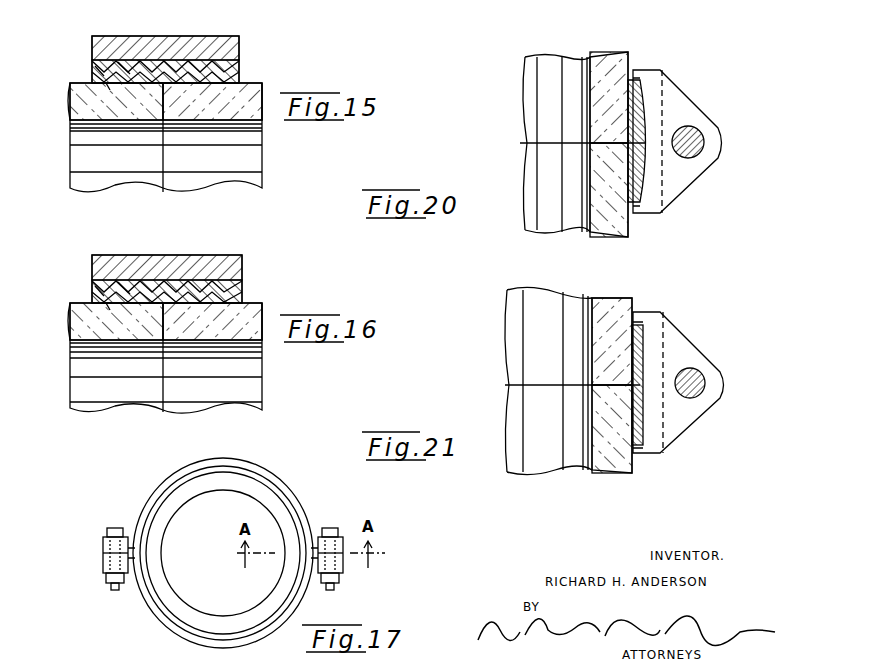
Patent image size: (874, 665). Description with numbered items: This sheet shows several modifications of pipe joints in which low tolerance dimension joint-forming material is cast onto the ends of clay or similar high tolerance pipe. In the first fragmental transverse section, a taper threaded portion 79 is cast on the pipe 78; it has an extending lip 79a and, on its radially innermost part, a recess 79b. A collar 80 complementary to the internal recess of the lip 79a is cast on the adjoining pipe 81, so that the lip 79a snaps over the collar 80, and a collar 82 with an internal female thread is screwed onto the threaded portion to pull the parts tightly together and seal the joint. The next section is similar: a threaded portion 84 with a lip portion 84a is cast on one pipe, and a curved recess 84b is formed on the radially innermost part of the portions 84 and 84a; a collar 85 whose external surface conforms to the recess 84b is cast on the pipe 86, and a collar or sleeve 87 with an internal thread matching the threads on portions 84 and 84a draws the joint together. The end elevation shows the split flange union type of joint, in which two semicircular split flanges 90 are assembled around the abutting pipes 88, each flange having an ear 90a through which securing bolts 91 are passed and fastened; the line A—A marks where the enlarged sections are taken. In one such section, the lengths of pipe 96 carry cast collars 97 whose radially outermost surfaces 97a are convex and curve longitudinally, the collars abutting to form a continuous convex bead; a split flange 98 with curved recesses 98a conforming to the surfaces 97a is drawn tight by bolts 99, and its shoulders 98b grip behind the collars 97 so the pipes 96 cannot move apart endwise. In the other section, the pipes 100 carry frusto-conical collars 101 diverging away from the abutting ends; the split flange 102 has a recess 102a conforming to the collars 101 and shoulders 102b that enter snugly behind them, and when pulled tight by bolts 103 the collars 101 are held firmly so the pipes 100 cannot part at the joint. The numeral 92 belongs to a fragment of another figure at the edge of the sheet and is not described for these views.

In FIG. 15, the pipe 78 is at (262, 84).
In FIG. 15, the taper threaded portion 79 is at (192, 68).
In FIG. 15, the extending lip 79a is at (95, 66).
In FIG. 15, the recess 79b is at (128, 70).
In FIG. 15, the collar 80 is at (106, 83).
In FIG. 15, the pipe 81 is at (72, 97).
In FIG. 15, the collar 82 is at (173, 36).
In FIG. 16, the threaded portion 84 is at (195, 290).
In FIG. 16, the lip portion 84a is at (95, 288).
In FIG. 16, the curved recess 84b is at (128, 292).
In FIG. 16, the collar 85 is at (106, 303).
In FIG. 16, the pipe 86 is at (72, 333).
In FIG. 16, the collar or sleeve 87 is at (172, 256).
In FIG. 16, the pipes 88 is at (262, 304).
In FIG. 17, the pipes 88 is at (186, 504).
In FIG. 17, the split flange 90 is at (238, 459).
In FIG. 17, the ear 90a is at (105, 562).
In FIG. 17, the securing bolt 91 is at (112, 528).
In FIG. 20, the clamp member 92 is at (620, 0).
In FIG. 20, the pipe 96 is at (582, 58).
In FIG. 20, the collar 97 is at (640, 118).
In FIG. 20, the radially outermost surface 97a is at (642, 126).
In FIG. 20, the split flange 98 is at (692, 170).
In FIG. 20, the curved recess 98a is at (640, 166).
In FIG. 20, the shoulder 98b is at (640, 76).
In FIG. 20, the bolt 99 is at (705, 142).
In FIG. 21, the pipe 100 is at (610, 298).
In FIG. 21, the collar 101 is at (640, 340).
In FIG. 21, the split flange 102 is at (692, 412).
In FIG. 21, the recess 102a is at (640, 358).
In FIG. 21, the shoulder 102b is at (643, 312).
In FIG. 21, the bolt 103 is at (706, 383).